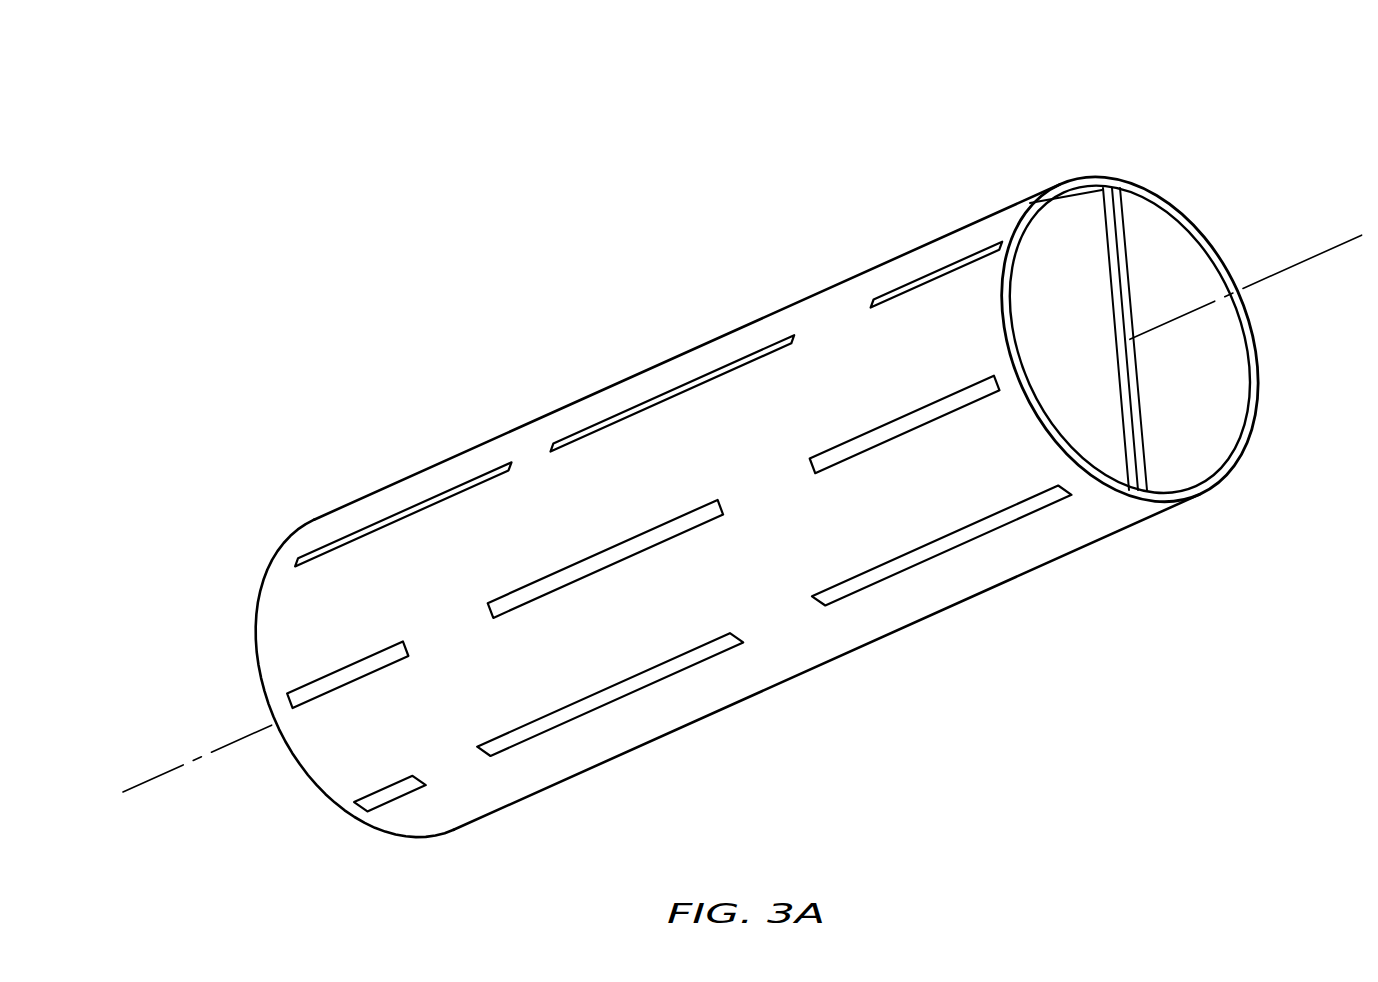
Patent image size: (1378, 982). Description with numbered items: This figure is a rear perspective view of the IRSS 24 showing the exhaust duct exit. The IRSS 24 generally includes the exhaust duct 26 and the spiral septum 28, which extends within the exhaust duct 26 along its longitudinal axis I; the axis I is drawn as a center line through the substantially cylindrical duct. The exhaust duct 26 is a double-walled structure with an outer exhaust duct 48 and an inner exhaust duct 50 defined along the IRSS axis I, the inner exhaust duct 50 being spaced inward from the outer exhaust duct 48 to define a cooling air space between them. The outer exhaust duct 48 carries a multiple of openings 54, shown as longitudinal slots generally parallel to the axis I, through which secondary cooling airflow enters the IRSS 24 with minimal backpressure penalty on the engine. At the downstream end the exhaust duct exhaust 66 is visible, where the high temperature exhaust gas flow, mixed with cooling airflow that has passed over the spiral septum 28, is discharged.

The IRSS 24 is at (728, 432).
The exhaust duct 26 is at (909, 265).
The spiral septum 28 is at (1081, 230).
The outer exhaust duct 48 is at (1162, 187).
The inner exhaust duct 50 is at (1160, 228).
The openings 54 is at (602, 426).
The exhaust duct exhaust 66 is at (1125, 472).
The longitudinal axis I is at (1335, 248).